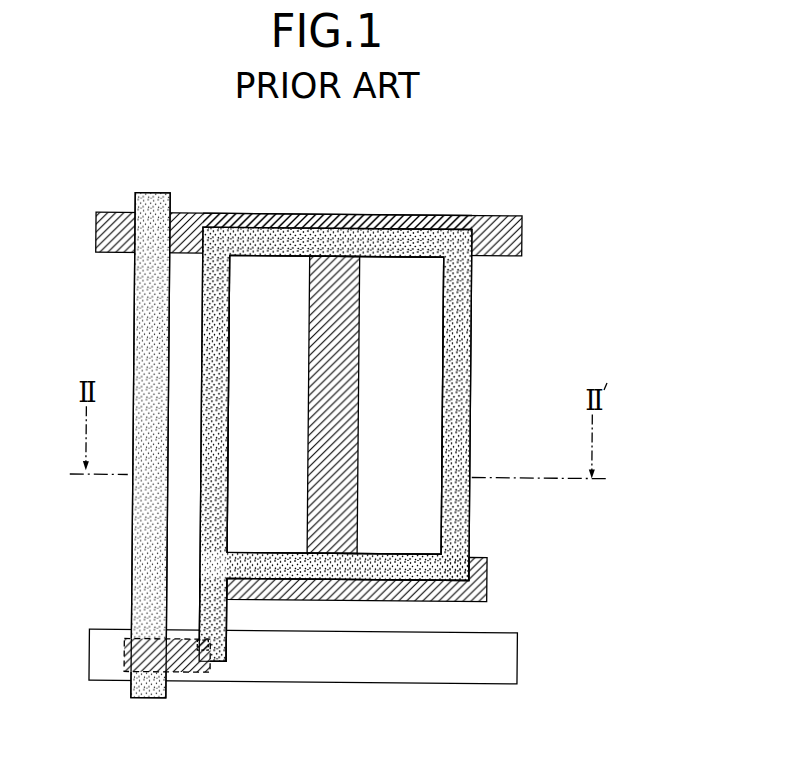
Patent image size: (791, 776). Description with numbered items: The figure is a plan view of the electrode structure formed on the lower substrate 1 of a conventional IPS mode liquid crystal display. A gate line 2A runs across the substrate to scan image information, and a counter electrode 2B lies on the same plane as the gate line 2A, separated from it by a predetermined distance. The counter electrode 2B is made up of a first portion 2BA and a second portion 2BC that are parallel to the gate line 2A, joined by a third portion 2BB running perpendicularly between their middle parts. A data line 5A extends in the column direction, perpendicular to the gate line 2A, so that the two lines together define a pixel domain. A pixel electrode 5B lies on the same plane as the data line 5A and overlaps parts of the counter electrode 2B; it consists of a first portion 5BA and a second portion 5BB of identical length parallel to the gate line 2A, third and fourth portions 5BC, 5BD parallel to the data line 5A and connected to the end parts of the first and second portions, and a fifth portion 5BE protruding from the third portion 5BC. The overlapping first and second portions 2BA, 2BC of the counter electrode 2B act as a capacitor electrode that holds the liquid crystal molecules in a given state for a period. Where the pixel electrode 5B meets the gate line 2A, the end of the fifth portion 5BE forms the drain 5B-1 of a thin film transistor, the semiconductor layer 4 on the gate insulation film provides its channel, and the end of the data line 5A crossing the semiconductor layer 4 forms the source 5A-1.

The lower substrate 1 is at (523, 542).
The gate line 2A is at (438, 683).
The counter electrode 2B is at (349, 204).
The first portion of counter electrode 2BA is at (401, 222).
The third portion of counter electrode 2BB is at (354, 405).
The second portion of counter electrode 2BC is at (490, 582).
The semiconductor layer 4 is at (185, 673).
The data line 5A is at (137, 585).
The source 5A-1 is at (135, 663).
The pixel electrode 5B is at (385, 408).
The drain 5B-1 is at (212, 653).
The first portion of pixel electrode 5BA is at (326, 238).
The second portion of pixel electrode 5BB is at (403, 572).
The third portion of pixel electrode 5BC is at (218, 372).
The fourth portion of pixel electrode 5BD is at (464, 314).
The fifth portion of pixel electrode 5BE is at (217, 617).